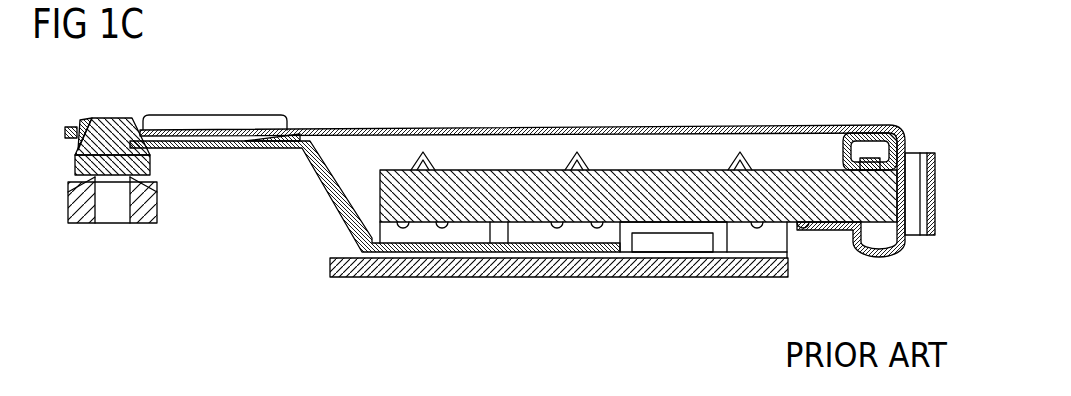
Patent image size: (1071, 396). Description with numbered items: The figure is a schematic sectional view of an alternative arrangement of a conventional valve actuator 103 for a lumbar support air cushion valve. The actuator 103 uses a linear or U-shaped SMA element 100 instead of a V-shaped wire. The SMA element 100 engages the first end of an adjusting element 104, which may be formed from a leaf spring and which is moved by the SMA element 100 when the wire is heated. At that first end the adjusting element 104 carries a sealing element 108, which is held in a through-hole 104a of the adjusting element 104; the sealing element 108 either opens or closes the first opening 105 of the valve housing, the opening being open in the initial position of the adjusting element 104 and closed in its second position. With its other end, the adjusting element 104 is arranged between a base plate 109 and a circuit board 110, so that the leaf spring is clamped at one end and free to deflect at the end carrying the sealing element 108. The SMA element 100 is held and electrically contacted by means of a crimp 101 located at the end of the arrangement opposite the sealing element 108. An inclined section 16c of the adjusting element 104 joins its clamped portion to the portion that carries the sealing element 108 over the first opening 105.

The SMA element 100 is at (513, 128).
The crimp 101 is at (902, 140).
The actuator 103 is at (438, 82).
The adjusting element 104 is at (322, 222).
The through-hole 104a is at (150, 158).
The first opening 105 is at (112, 215).
The sealing element 108 is at (111, 118).
The base plate 109 is at (558, 277).
The circuit board 110 is at (660, 170).
The inclined section 16c is at (331, 189).